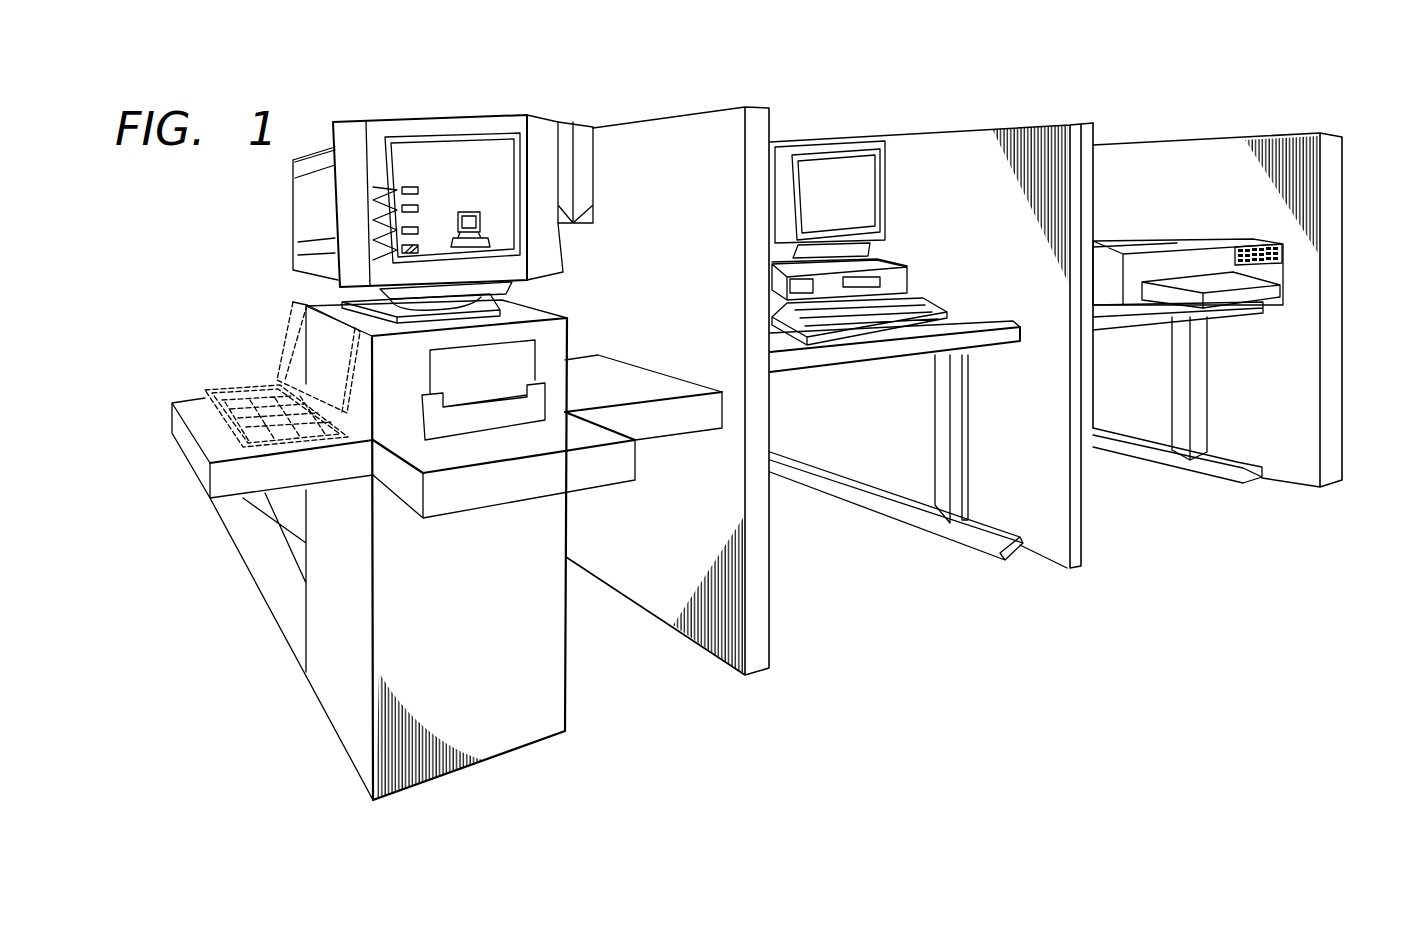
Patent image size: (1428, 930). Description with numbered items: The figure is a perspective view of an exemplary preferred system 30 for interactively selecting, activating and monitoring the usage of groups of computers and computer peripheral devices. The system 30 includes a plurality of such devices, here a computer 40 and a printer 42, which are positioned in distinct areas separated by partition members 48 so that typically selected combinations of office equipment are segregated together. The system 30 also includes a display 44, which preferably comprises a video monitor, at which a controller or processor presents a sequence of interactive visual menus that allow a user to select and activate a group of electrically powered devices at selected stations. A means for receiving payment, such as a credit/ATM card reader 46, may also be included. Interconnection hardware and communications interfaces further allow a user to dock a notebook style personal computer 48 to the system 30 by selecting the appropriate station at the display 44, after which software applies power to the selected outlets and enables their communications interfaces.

The system 30 is at (999, 648).
The computer 40 is at (906, 274).
The printer 42 is at (1184, 240).
The display 44 is at (386, 89).
The credit/ATM card reader 46 is at (582, 133).
The partition members 48 is at (239, 357).